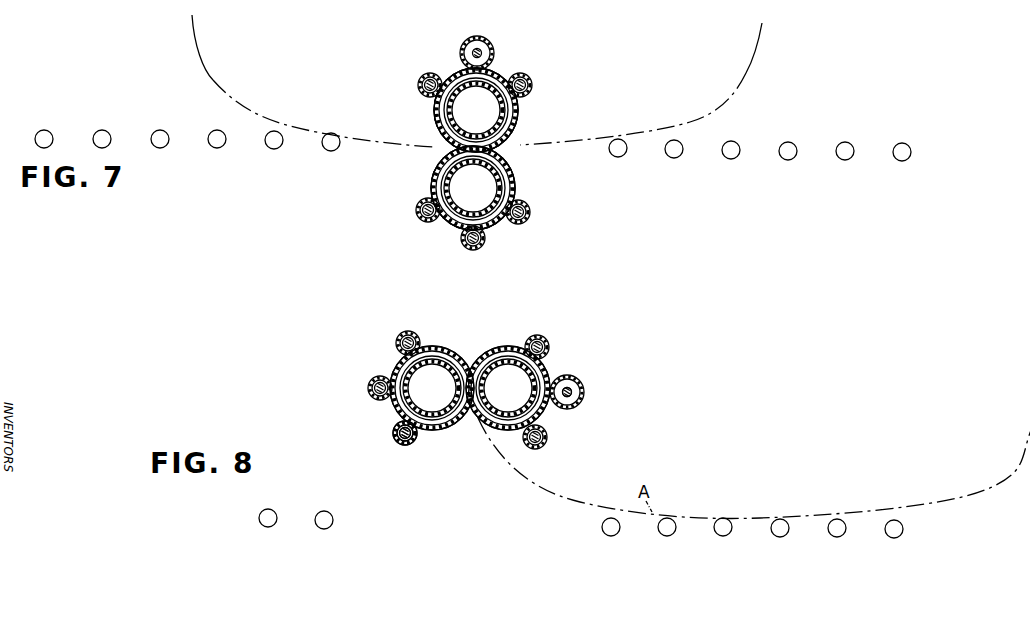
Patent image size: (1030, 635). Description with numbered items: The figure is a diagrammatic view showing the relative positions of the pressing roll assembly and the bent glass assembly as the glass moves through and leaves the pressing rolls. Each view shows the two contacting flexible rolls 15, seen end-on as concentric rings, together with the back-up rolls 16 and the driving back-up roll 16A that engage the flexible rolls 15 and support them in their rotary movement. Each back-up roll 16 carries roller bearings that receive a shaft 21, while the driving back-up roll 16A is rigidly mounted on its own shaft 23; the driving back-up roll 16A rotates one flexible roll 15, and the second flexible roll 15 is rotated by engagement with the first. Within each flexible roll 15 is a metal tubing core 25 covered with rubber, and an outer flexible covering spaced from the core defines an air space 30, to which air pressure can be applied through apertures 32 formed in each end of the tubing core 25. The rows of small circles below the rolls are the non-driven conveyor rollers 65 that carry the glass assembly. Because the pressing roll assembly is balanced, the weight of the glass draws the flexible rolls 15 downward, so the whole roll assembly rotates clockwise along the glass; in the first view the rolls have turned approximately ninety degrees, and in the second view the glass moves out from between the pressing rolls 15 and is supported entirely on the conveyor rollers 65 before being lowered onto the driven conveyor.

In FIG. 7, the flexible rolls 15 is at (493, 138).
In FIG. 8, the flexible rolls 15 is at (484, 372).
In FIG. 7, the back-up rolls 16 is at (532, 85).
In FIG. 8, the back-up rolls 16 is at (395, 428).
In FIG. 7, the driving back-up roll 16A is at (490, 42).
In FIG. 8, the driving back-up roll 16A is at (585, 392).
In FIG. 7, the shaft 21 is at (531, 212).
In FIG. 8, the shaft 21 is at (548, 437).
In FIG. 8, the shaft 23 is at (574, 386).
In FIG. 7, the metal tubing core 25 is at (452, 108).
In FIG. 7, the air space 30 is at (458, 156).
In FIG. 8, the air space 30 is at (483, 406).
In FIG. 7, the apertures 32 is at (489, 172).
In FIG. 8, the apertures 32 is at (518, 406).
In FIG. 7, the conveyor rollers 65 is at (268, 147).
In FIG. 8, the conveyor rollers 65 is at (277, 516).